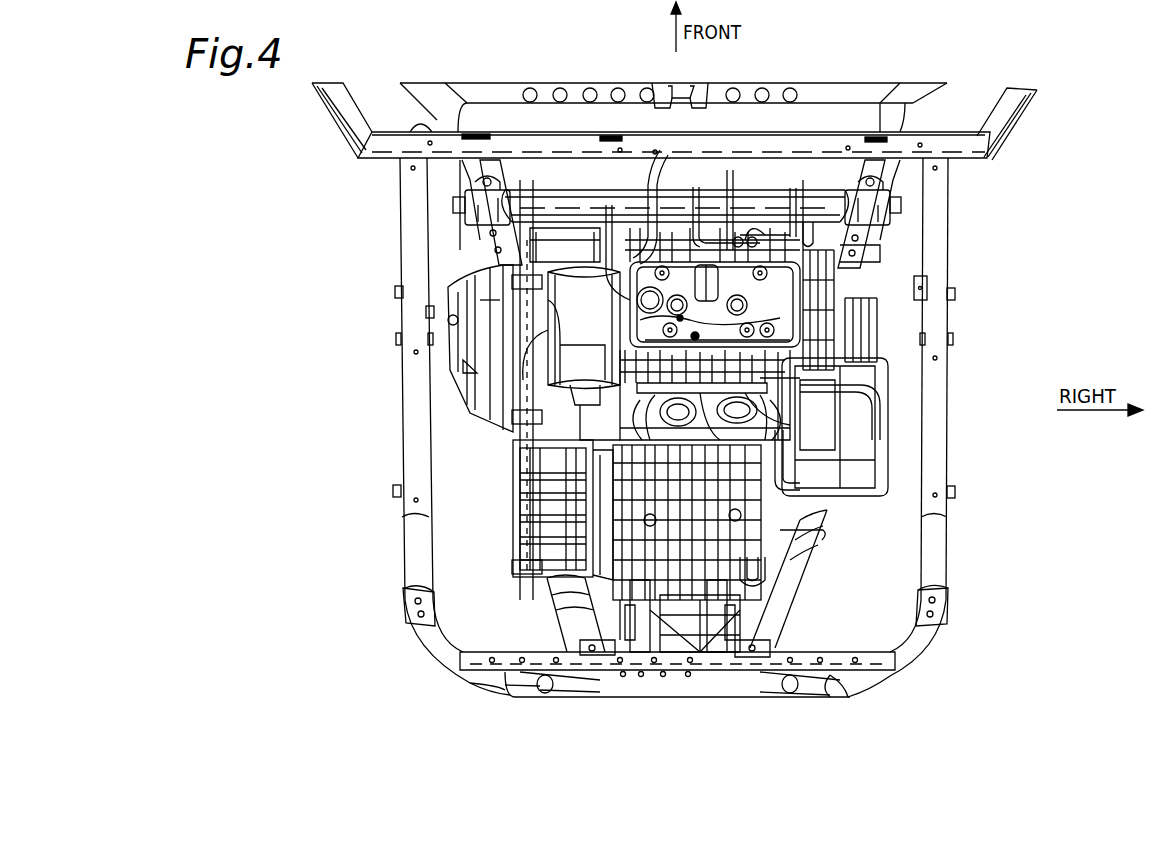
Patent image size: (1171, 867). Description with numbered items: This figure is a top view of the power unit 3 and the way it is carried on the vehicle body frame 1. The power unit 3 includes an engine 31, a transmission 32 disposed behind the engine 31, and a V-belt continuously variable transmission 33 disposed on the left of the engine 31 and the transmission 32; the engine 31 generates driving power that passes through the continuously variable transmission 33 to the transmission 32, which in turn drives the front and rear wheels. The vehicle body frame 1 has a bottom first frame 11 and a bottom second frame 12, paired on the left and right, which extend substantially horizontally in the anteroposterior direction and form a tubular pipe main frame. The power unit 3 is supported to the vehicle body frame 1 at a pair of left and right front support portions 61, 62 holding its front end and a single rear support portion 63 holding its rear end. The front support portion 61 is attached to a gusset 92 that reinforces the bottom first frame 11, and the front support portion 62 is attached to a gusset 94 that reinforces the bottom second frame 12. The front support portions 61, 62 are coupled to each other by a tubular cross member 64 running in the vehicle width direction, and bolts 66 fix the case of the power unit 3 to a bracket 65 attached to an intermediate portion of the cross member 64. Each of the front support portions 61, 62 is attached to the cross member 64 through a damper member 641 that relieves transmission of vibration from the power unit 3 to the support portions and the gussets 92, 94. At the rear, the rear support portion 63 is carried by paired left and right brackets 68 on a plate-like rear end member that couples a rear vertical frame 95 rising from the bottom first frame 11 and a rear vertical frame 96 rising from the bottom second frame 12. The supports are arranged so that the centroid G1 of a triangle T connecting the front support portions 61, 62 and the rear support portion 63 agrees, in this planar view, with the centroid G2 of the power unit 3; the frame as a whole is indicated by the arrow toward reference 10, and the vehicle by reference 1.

The vehicle body frame 1 is at (393, 614).
The power unit 3 is at (488, 588).
The vehicle body frame 10 is at (951, 702).
The bottom first frame 11 is at (572, 607).
The bottom second frame 12 is at (790, 573).
The engine 31 is at (727, 330).
The transmission 32 is at (700, 487).
The V-belt continuously variable transmission 33 is at (553, 437).
The front support portion 61 is at (467, 210).
The front support portion 62 is at (887, 222).
The rear support portion 63 is at (693, 643).
The cross member 64 is at (605, 195).
The bracket 65 is at (700, 187).
The bolts 66 is at (713, 237).
The brackets 68 is at (632, 642).
The gusset 92 is at (467, 238).
The gusset 94 is at (880, 243).
The rear vertical frame 95 is at (545, 675).
The rear vertical frame 96 is at (810, 680).
The damper member 641 is at (467, 192).
The centroid G1 is at (680, 318).
The centroid G2 is at (740, 388).
The triangle T is at (605, 452).